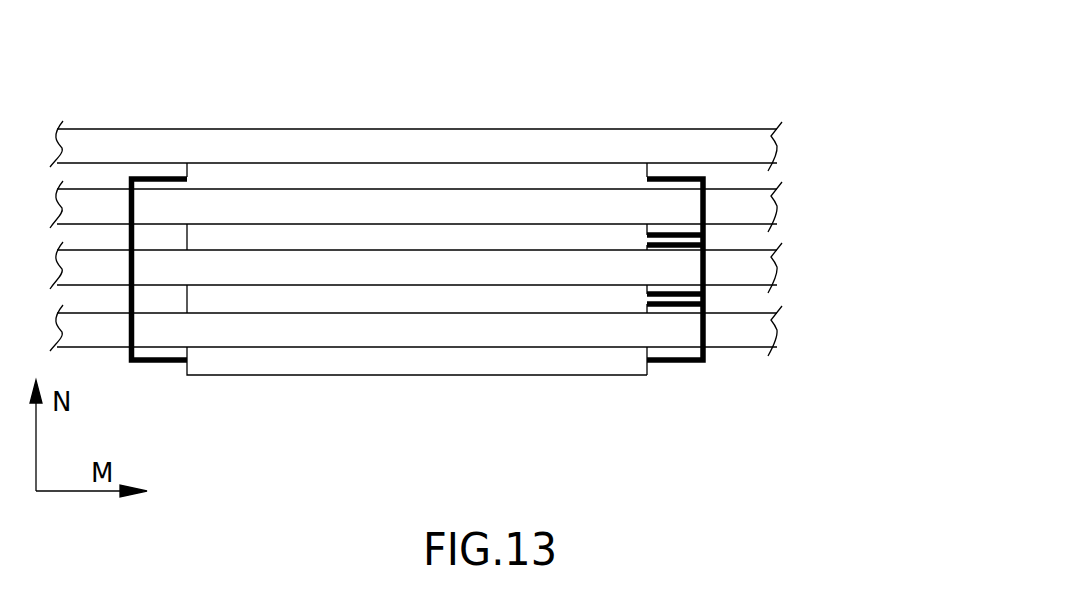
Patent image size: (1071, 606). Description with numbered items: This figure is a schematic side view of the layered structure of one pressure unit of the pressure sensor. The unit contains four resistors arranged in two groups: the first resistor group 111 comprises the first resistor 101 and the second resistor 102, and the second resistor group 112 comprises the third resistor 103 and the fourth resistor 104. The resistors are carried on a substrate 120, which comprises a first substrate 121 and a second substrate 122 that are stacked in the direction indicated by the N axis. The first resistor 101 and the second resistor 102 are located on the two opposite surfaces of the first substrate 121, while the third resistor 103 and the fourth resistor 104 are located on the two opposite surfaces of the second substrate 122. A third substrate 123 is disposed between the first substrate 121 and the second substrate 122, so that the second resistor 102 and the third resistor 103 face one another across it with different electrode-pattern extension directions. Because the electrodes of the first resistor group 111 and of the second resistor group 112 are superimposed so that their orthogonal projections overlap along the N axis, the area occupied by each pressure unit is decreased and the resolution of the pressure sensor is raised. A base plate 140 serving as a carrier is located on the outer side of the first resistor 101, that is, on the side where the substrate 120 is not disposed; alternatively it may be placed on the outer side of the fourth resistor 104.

The first resistor 101 is at (346, 174).
The second resistor 102 is at (483, 236).
The third resistor 103 is at (323, 303).
The fourth resistor 104 is at (492, 357).
The first resistor group 111 is at (490, 53).
The second resistor group 112 is at (497, 428).
The substrate 120 is at (880, 207).
The first substrate 121 is at (760, 210).
The second substrate 122 is at (760, 334).
The third substrate 123 is at (760, 271).
The base plate 140 is at (760, 150).